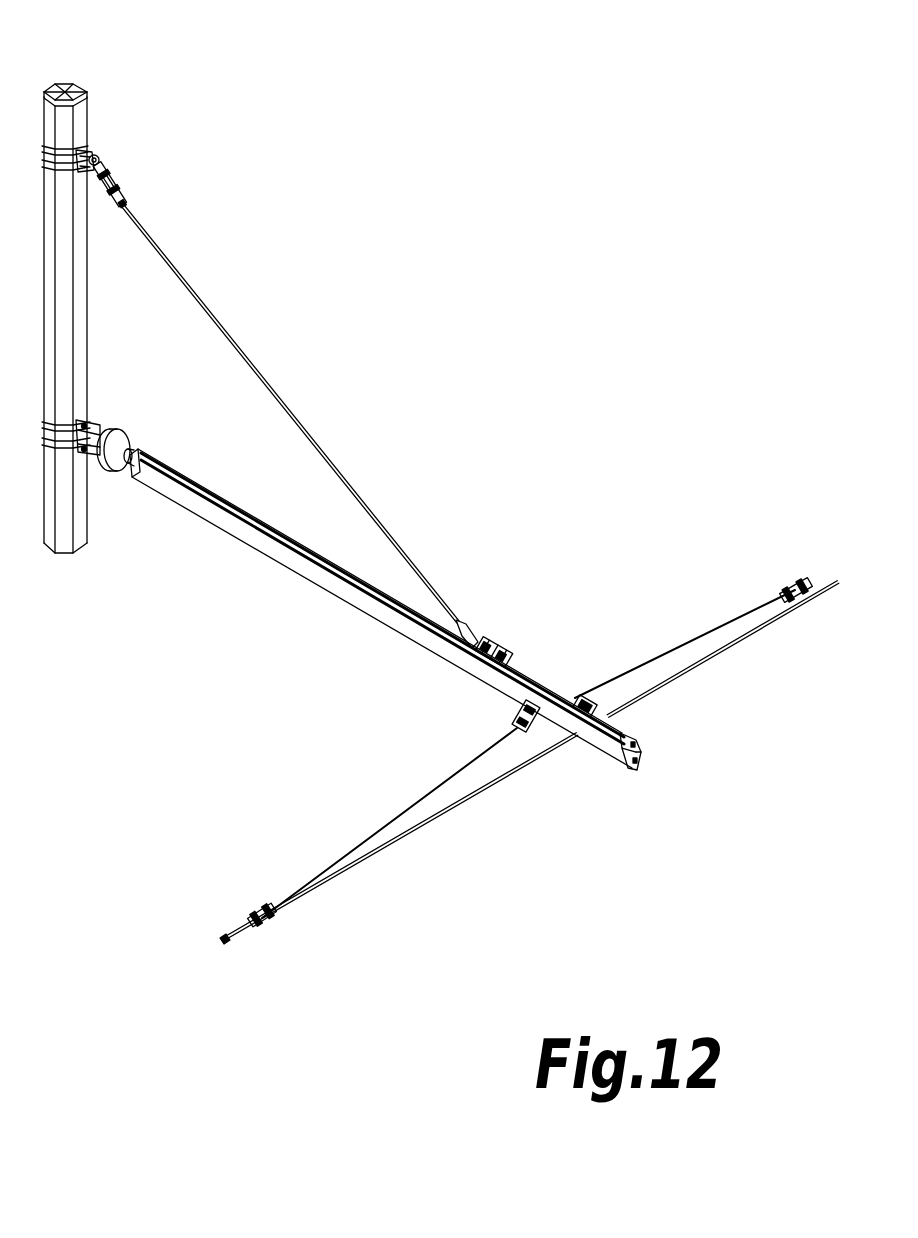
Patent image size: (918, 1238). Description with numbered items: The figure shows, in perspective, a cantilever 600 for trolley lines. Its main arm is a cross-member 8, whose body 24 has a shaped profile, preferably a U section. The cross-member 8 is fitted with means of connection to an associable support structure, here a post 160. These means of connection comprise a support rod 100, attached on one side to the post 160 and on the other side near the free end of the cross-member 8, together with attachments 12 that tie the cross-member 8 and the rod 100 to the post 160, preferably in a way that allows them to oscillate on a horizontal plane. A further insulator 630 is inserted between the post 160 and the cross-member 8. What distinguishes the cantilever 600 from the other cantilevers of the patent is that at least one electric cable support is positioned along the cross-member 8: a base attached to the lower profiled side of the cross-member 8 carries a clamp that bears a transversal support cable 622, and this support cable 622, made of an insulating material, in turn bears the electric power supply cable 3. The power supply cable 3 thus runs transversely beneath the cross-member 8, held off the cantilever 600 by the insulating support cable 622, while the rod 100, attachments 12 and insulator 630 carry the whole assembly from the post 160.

The attachments 12 is at (115, 150).
The post 160 is at (92, 283).
The support rod 100 is at (293, 400).
The cantilever 600 is at (529, 555).
The insulator 630 is at (124, 430).
The body 24 is at (170, 488).
The cross-member 8 is at (381, 609).
The support cable 622 is at (625, 677).
The electric power supply cable 3 is at (427, 817).